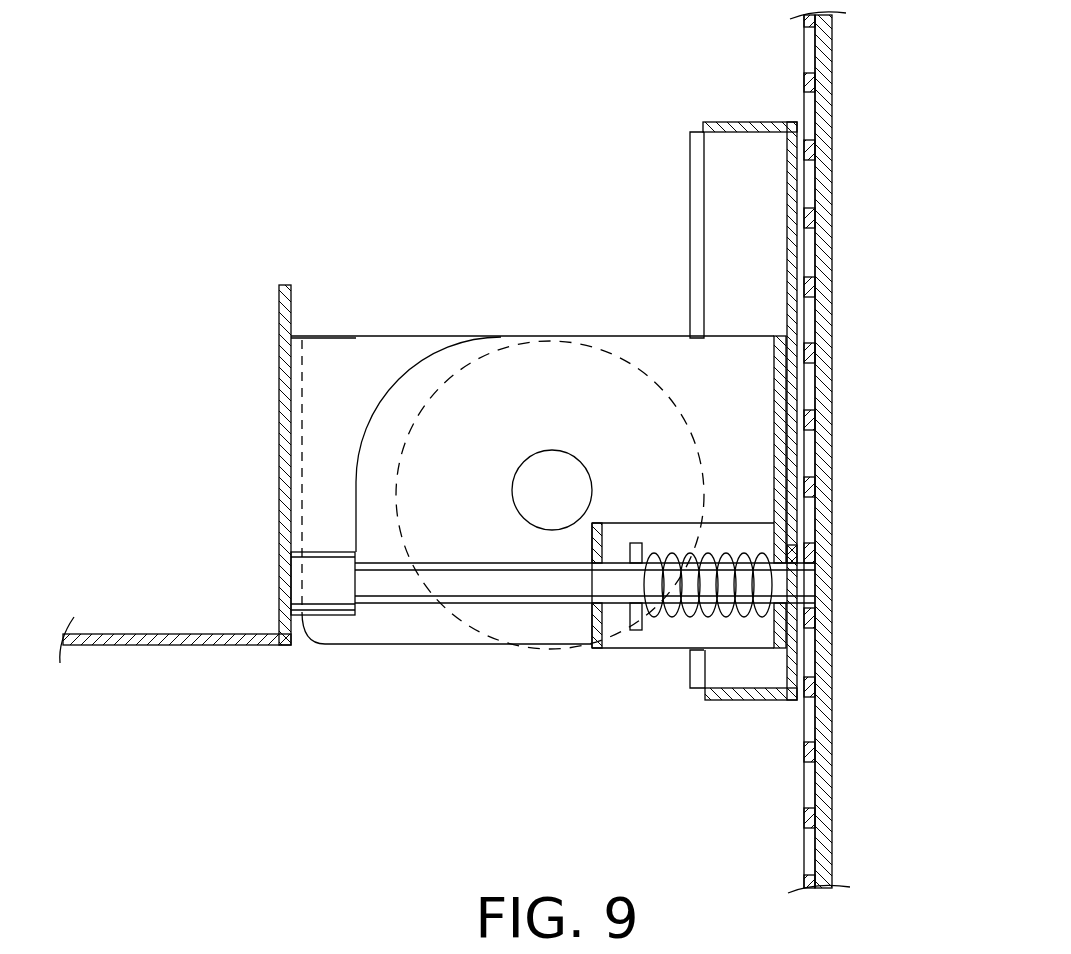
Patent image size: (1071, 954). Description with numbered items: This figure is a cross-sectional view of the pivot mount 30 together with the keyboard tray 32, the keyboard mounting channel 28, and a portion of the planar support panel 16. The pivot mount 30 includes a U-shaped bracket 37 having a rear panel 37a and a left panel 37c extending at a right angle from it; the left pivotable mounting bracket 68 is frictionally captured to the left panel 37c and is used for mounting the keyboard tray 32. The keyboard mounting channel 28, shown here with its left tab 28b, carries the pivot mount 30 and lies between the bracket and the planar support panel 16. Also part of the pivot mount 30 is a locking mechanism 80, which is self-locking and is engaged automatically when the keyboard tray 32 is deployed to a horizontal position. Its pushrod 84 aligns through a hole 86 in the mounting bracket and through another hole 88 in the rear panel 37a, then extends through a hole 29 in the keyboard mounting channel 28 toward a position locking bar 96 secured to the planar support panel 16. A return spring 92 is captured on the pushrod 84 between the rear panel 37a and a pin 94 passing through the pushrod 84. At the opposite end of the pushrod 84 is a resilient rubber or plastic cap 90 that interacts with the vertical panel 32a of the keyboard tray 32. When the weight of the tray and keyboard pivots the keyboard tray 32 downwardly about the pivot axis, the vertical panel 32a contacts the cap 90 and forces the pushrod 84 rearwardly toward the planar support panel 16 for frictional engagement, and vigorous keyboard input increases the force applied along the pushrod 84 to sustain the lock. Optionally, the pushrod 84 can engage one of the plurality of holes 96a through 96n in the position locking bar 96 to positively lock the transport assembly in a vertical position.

The planar support panel 16 is at (832, 97).
The hole 96a is at (810, 57).
The position locking bar 96 is at (805, 748).
The hole 96n is at (810, 867).
The hole 88 is at (805, 622).
The keyboard mounting channel 28 is at (758, 127).
The left tab 28b is at (697, 220).
The keyboard tray 32 is at (140, 632).
The vertical panel 32a is at (278, 447).
The U-shaped bracket 37 is at (657, 335).
The left panel 37c is at (427, 352).
The rear panel 37a is at (776, 388).
The left pivotable mounting bracket 68 is at (368, 350).
The pivot mount 30 is at (405, 328).
The resilient rubber or plastic cap 90 is at (318, 578).
The pushrod 84 is at (513, 580).
The pin 94 is at (632, 545).
The return spring 92 is at (752, 562).
The locking mechanism 80 is at (588, 658).
The hole 86 is at (606, 610).
The hole 29 is at (796, 545).